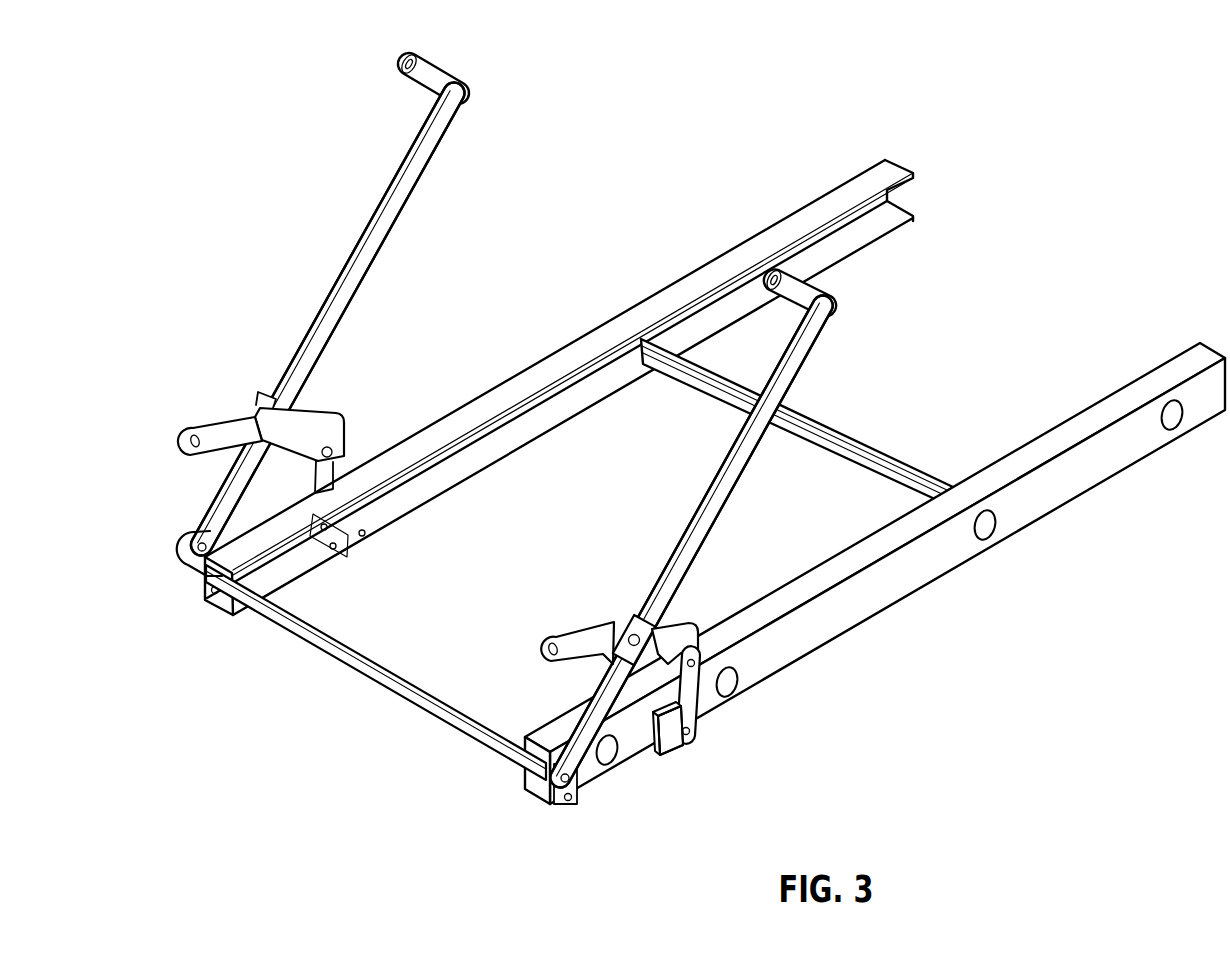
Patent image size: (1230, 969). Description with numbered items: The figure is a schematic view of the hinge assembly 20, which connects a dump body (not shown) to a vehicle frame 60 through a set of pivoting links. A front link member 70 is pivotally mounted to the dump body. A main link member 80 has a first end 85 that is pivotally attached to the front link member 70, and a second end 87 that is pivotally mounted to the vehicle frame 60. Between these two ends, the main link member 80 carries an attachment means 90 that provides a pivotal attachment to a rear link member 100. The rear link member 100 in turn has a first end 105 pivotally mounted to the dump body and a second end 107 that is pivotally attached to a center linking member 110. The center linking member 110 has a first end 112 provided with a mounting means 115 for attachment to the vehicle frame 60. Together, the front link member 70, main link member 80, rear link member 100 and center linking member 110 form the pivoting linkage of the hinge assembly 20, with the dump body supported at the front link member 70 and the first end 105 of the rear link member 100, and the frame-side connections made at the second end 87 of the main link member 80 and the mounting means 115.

The hinge assembly 20 is at (328, 318).
The vehicle frame 60 is at (875, 573).
The front link member 70 is at (660, 178).
The main link member 80 is at (691, 547).
The first end 85 is at (537, 434).
The second end 87 is at (156, 542).
The attachment means 90 is at (592, 595).
The rear link member 100 is at (328, 431).
The first end 105 is at (168, 425).
The second end 107 is at (715, 600).
The center linking member 110 is at (751, 695).
The first end 112 is at (736, 738).
The mounting means 115 is at (633, 777).